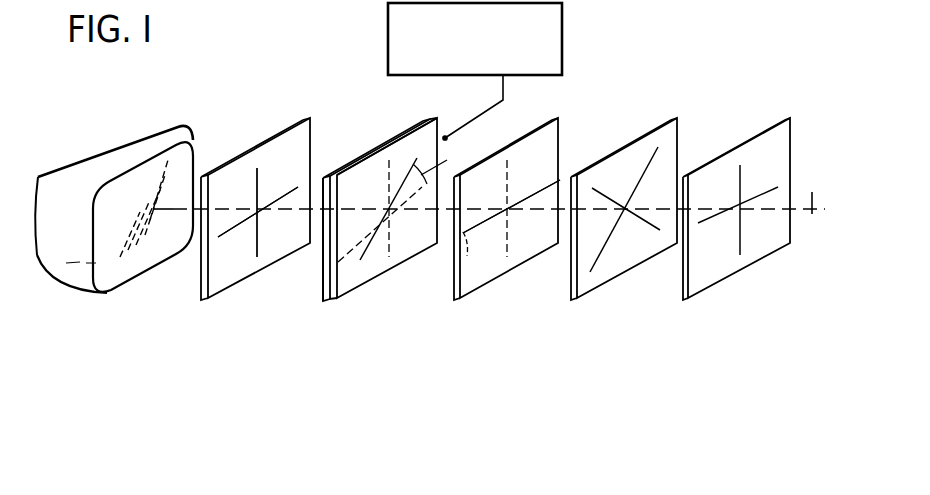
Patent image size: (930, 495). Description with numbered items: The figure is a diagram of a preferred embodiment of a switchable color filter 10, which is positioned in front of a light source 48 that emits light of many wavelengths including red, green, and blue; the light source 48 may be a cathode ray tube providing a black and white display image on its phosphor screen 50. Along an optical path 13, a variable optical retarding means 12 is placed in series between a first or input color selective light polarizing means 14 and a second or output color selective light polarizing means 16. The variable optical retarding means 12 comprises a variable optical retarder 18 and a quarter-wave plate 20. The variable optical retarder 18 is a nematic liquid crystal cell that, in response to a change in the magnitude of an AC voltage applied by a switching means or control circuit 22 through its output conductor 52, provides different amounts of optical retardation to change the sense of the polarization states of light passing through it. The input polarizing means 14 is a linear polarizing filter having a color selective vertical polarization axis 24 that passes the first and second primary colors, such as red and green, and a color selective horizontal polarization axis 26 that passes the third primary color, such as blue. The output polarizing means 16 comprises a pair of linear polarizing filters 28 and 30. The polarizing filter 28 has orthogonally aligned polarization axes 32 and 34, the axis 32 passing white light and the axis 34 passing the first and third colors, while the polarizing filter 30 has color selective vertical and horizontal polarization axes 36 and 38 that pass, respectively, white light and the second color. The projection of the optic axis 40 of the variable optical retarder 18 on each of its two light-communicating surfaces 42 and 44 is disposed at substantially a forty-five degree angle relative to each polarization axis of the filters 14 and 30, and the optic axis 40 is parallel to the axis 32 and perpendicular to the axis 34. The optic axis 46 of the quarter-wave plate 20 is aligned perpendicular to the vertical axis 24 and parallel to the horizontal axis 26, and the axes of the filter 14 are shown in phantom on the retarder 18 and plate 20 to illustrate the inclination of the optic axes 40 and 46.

The switchable color filter 10 is at (272, 375).
The variable optical retarding means 12 is at (410, 302).
The optical path 13 is at (812, 192).
The input color selective light polarizing means 14 is at (231, 297).
The output color selective light polarizing means 16 is at (608, 328).
The variable optical retarder 18 is at (355, 296).
The quarter-wave plate 20 is at (470, 296).
The control circuit 22 is at (562, 25).
The vertical polarization axis 24 is at (257, 183).
The horizontal polarization axis 26 is at (292, 209).
The polarizing filter 28 is at (603, 285).
The polarizing filter 30 is at (713, 287).
The polarization axis 32 is at (652, 152).
The polarization axis 34 is at (596, 190).
The vertical polarization axis 36 is at (740, 193).
The horizontal polarization axis 38 is at (750, 208).
The optic axis 40 is at (377, 250).
The light-communicating surface 42 is at (323, 177).
The light-communicating surface 44 is at (358, 175).
The optic axis 46 is at (490, 223).
The light source 48 is at (70, 165).
The phosphor screen 50 is at (185, 124).
The output conductor 52 is at (503, 90).